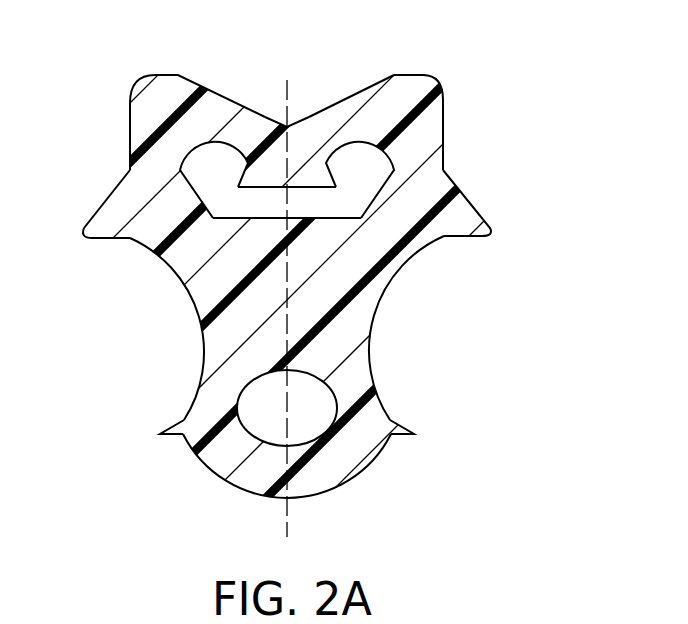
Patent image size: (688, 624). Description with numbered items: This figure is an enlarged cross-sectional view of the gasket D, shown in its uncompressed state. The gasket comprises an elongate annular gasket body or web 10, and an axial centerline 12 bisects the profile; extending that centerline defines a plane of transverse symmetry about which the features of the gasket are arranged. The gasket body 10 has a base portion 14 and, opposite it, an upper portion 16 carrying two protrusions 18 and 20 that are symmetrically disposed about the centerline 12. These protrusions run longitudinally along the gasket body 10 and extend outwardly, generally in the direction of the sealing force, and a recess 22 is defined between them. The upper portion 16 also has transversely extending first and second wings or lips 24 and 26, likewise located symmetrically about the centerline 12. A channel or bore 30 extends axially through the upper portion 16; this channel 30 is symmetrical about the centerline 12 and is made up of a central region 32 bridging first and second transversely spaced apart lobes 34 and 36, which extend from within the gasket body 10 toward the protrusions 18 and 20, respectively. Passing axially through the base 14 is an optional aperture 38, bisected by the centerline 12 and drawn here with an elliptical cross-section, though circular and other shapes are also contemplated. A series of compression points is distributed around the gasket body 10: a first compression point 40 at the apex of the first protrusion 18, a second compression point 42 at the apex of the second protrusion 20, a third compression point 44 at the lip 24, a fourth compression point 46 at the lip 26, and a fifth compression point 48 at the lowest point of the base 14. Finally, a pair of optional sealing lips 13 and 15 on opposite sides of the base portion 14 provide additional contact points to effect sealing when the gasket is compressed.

The gasket body 10 is at (418, 275).
The axial centerline 12 is at (288, 520).
The sealing lip 13 is at (176, 433).
The base portion 14 is at (215, 467).
The sealing lip 15 is at (398, 430).
The upper portion 16 is at (130, 147).
The protrusion 18 is at (178, 88).
The protrusion 20 is at (395, 83).
The recess 22 is at (273, 120).
The first wing or lip 24 is at (96, 227).
The second wing or lip 26 is at (483, 223).
The channel or bore 30 is at (277, 218).
The central region 32 is at (307, 200).
The first lobe 34 is at (202, 163).
The second lobe 36 is at (363, 167).
The aperture 38 is at (243, 421).
The first compression point 40 is at (157, 75).
The second compression point 42 is at (420, 75).
The third compression point 44 is at (103, 238).
The fourth compression point 46 is at (474, 237).
The fifth compression point 48 is at (268, 500).
The gasket D is at (494, 103).